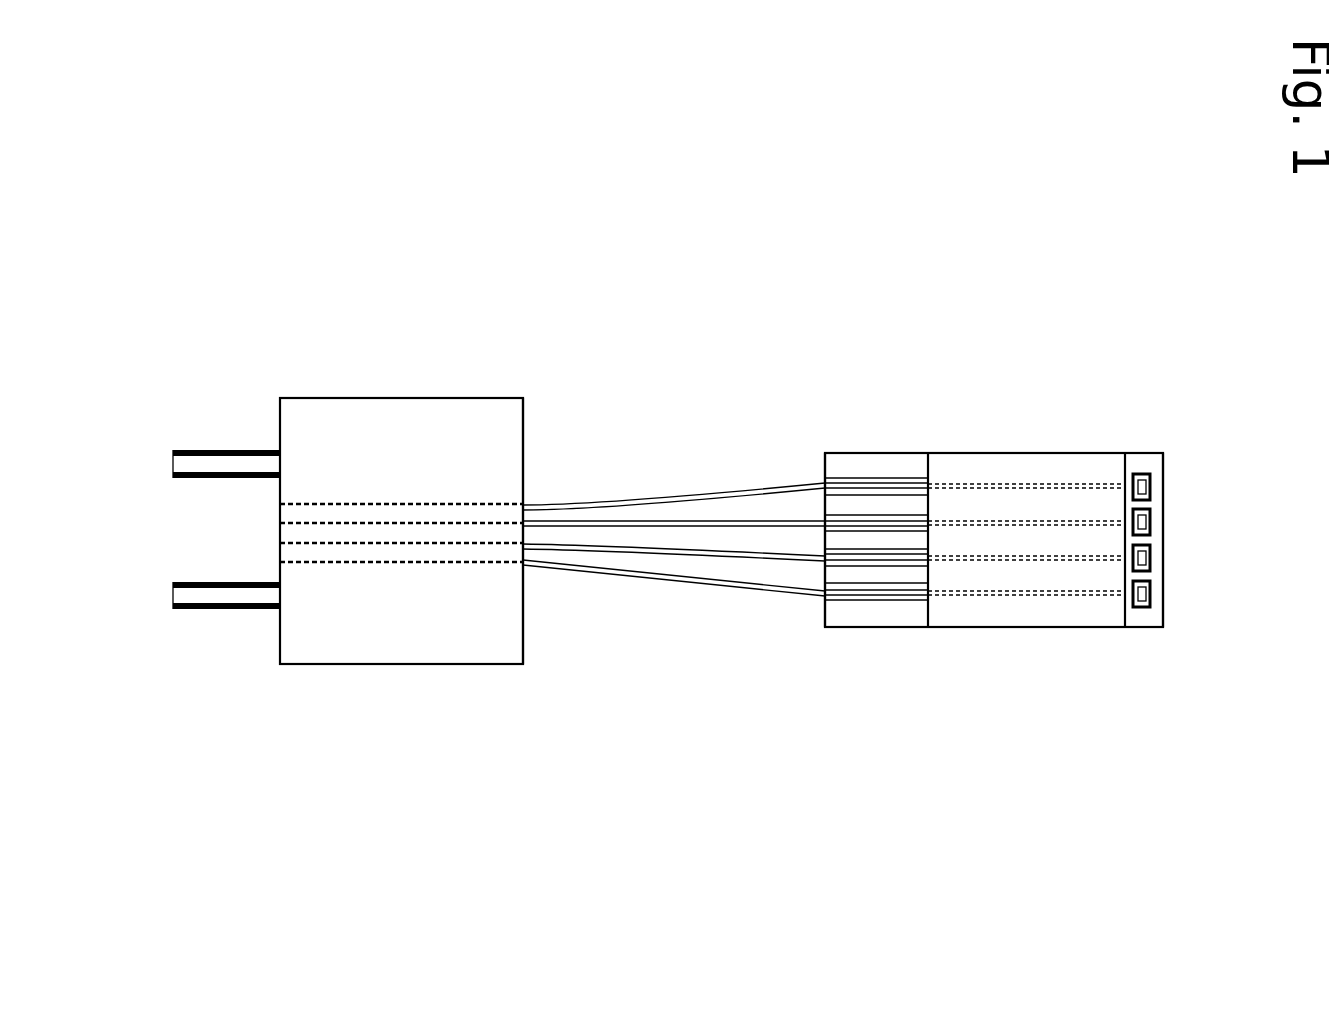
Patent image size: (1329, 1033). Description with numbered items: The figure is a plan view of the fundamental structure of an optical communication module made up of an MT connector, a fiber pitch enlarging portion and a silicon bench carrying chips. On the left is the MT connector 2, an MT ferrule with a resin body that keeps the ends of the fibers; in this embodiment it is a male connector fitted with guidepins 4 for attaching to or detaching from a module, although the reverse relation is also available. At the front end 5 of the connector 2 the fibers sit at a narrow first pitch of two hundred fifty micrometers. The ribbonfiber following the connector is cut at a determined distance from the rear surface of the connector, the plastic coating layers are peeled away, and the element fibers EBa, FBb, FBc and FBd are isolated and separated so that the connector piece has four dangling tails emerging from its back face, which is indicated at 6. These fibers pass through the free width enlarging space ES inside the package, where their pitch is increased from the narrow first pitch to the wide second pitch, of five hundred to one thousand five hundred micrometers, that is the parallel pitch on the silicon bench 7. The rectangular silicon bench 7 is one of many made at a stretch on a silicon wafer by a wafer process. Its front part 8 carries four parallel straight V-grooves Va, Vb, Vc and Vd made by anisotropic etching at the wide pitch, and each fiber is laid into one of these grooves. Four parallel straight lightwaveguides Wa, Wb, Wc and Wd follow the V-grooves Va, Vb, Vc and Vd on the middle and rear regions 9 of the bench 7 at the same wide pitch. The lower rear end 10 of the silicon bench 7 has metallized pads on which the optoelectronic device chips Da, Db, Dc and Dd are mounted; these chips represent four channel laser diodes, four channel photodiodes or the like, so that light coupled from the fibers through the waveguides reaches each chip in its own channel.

The MT connector 2 is at (357, 398).
The guidepins 4 is at (212, 456).
The front end of the connector 5 is at (280, 512).
The end face 6 is at (530, 630).
The silicon bench 7 is at (952, 453).
The front part of the silicon bench 8 is at (913, 620).
The middle and rear regions of the silicon bench 9 is at (998, 620).
The lower rear end of the silicon bench 10 is at (1155, 620).
The free width enlarging space ES is at (605, 393).
The element fiber EBa is at (651, 497).
The element fiber FBb is at (723, 522).
The element fiber FBc is at (655, 549).
The element fiber FBd is at (773, 592).
The V-groove Va is at (858, 482).
The V-groove Vb is at (920, 523).
The V-groove Vc is at (844, 562).
The V-groove Vd is at (912, 595).
The lightwaveguide Wa is at (992, 488).
The lightwaveguide Wb is at (1056, 523).
The lightwaveguide Wc is at (1002, 562).
The lightwaveguide Wd is at (1095, 597).
The optoelectronic device chip Da is at (1150, 483).
The optoelectronic device chip Db is at (1150, 520).
The optoelectronic device chip Dc is at (1150, 558).
The optoelectronic device chip Dd is at (1150, 594).